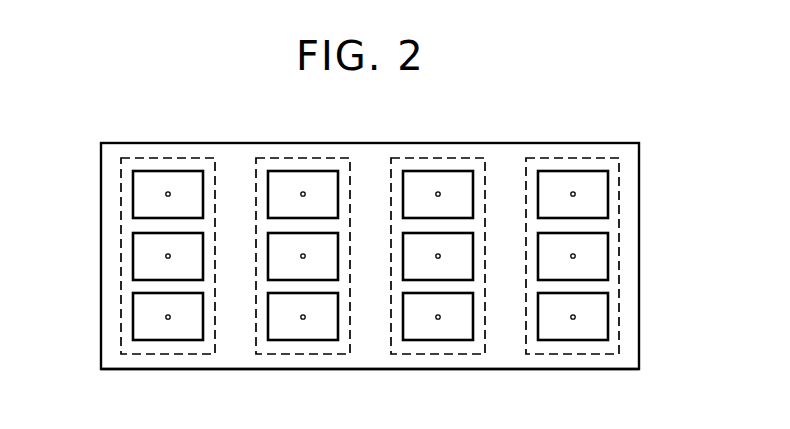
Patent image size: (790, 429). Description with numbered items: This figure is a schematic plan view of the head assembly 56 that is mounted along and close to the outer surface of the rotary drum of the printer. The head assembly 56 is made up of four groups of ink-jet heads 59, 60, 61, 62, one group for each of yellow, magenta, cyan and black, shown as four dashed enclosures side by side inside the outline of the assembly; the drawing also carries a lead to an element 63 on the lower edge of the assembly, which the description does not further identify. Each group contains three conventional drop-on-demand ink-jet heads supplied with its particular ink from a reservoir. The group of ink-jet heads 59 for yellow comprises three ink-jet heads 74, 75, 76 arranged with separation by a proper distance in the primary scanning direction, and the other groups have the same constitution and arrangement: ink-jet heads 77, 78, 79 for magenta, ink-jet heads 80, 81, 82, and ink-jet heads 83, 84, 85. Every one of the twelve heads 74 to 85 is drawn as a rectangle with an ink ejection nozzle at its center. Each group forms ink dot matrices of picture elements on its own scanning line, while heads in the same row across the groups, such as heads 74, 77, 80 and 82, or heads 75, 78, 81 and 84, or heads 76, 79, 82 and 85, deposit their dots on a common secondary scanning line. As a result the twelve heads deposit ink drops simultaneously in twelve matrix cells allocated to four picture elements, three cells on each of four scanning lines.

The head assembly 56 is at (121, 137).
The group of ink-jet heads for yellow 59 is at (567, 158).
The group of ink-jet heads 60 is at (440, 158).
The group of ink-jet heads 61 is at (305, 158).
The group of ink-jet heads 62 is at (173, 158).
The base plate 63 is at (223, 362).
The ink-jet head 74 is at (598, 192).
The ink-jet head 75 is at (598, 265).
The ink-jet head 76 is at (598, 317).
The ink-jet head 77 is at (457, 198).
The ink-jet head 78 is at (462, 265).
The ink-jet head 79 is at (448, 333).
The ink-jet head 80 is at (280, 203).
The ink-jet head 81 is at (275, 262).
The ink-jet head 82 is at (313, 333).
The ink-jet head 83 is at (140, 193).
The ink-jet head 84 is at (140, 263).
The ink-jet head 85 is at (138, 320).